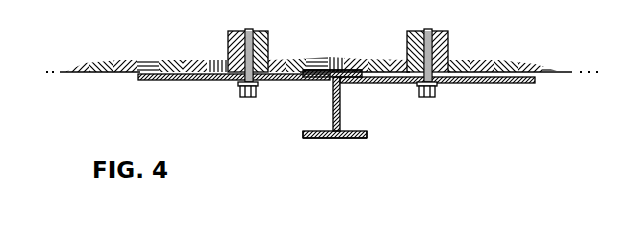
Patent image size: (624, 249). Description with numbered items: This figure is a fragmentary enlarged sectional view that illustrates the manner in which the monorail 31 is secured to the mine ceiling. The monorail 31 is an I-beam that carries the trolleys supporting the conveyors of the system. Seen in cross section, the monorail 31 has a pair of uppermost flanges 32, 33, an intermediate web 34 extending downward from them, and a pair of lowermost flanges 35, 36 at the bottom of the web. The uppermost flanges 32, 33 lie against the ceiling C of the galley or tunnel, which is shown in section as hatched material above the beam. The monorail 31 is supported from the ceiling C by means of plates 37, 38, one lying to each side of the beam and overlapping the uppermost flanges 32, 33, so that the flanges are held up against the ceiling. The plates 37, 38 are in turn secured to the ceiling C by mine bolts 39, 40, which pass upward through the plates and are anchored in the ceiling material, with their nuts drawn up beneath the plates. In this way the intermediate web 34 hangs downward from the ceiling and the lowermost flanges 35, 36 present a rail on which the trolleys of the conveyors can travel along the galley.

The ceiling C is at (553, 80).
The monorail 31 is at (345, 146).
The uppermost flange 32 is at (310, 68).
The uppermost flange 33 is at (363, 68).
The intermediate web 34 is at (340, 103).
The lowermost flange 35 is at (305, 138).
The lowermost flange 36 is at (367, 138).
The plate 37 is at (193, 82).
The plate 38 is at (467, 83).
The mine bolt 39 is at (247, 30).
The mine bolt 40 is at (432, 30).